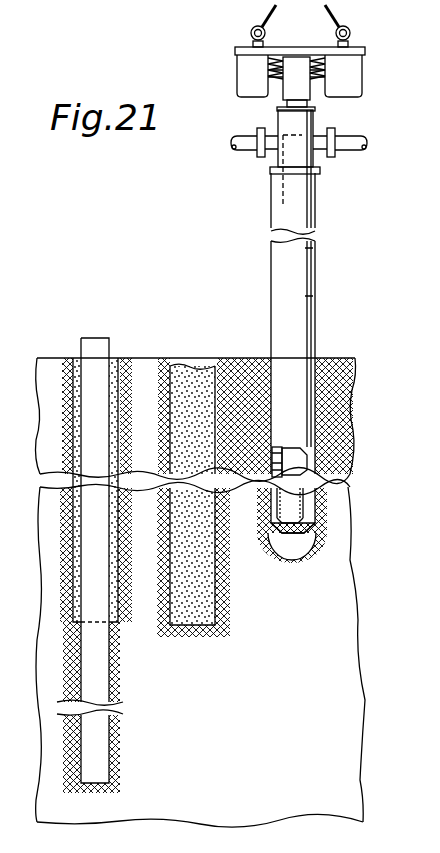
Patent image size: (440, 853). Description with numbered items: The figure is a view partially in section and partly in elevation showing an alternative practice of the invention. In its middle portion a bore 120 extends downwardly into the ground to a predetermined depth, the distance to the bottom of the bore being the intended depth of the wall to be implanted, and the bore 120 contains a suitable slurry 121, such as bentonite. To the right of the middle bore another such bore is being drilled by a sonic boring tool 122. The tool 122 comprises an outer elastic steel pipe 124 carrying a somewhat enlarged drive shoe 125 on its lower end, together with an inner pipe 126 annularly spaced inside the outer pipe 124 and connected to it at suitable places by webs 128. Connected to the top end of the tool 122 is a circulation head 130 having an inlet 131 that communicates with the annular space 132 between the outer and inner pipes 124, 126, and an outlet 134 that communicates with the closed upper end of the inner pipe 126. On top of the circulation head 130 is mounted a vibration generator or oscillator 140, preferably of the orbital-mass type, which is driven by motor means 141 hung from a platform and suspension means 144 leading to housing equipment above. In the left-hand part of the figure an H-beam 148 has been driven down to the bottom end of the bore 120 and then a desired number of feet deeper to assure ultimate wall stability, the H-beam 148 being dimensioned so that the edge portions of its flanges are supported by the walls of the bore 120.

The bore 120 is at (81, 358).
The slurry 121 is at (200, 366).
The sonic boring tool 122 is at (312, 294).
The outer elastic steel pipe 124 is at (271, 259).
The drive shoe 125 is at (327, 532).
The inner pipe 126 is at (317, 200).
The webs 128 is at (272, 462).
The circulation head 130 is at (277, 174).
The inlet 131 is at (231, 148).
The annular space 132 is at (281, 197).
The outlet 134 is at (347, 138).
The vibration generator or oscillator 140 is at (288, 90).
The motor means 141 is at (245, 68).
The suspension means 144 is at (346, 23).
The H-beam 148 is at (110, 344).